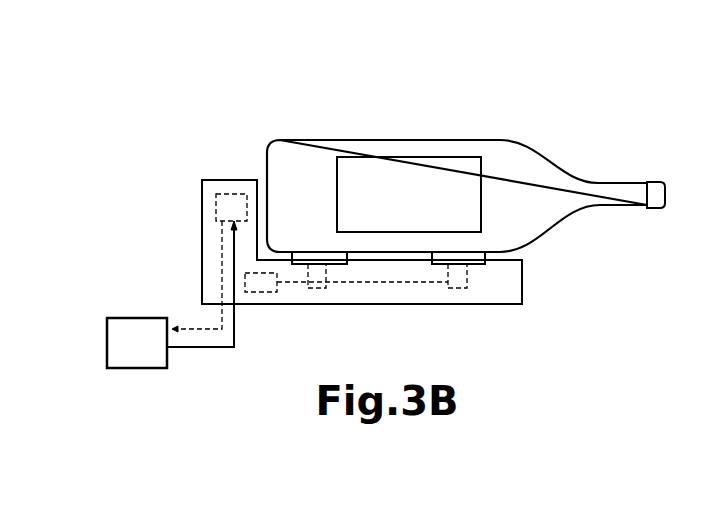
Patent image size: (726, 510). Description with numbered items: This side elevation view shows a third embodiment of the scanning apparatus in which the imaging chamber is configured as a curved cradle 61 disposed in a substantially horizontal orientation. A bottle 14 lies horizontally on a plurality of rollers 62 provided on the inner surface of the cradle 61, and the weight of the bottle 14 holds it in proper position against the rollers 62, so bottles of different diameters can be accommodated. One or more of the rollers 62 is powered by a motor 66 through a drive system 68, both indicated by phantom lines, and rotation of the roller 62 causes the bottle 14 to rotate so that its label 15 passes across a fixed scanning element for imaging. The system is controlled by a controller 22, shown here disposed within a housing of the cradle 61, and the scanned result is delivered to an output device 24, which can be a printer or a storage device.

The bottle 14 is at (532, 177).
The label 15 is at (407, 185).
The controller 22 is at (233, 193).
The output device 24 is at (137, 343).
The cradle 61 is at (512, 283).
The rollers 62 is at (333, 255).
The motor 66 is at (258, 285).
The drive system 68 is at (283, 282).